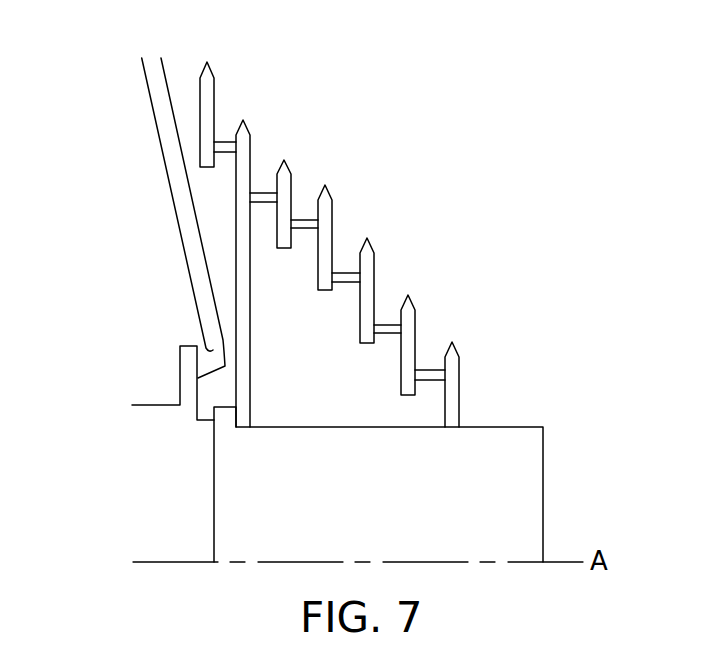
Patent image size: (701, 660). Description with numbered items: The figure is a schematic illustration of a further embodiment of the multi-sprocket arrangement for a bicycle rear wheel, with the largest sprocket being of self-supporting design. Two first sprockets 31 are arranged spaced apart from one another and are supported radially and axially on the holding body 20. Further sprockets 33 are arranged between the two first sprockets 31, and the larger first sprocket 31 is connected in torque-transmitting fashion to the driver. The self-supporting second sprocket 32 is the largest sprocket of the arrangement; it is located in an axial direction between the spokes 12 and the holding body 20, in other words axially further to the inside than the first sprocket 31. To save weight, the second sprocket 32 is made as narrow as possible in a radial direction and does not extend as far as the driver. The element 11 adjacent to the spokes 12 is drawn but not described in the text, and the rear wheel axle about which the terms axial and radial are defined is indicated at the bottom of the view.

The fixed member 11 is at (148, 403).
The spokes 12 is at (160, 90).
The holding body 20 is at (526, 427).
The first sprockets 31 is at (247, 127).
The second sprocket 32 is at (210, 70).
The further sprockets 33 is at (302, 143).